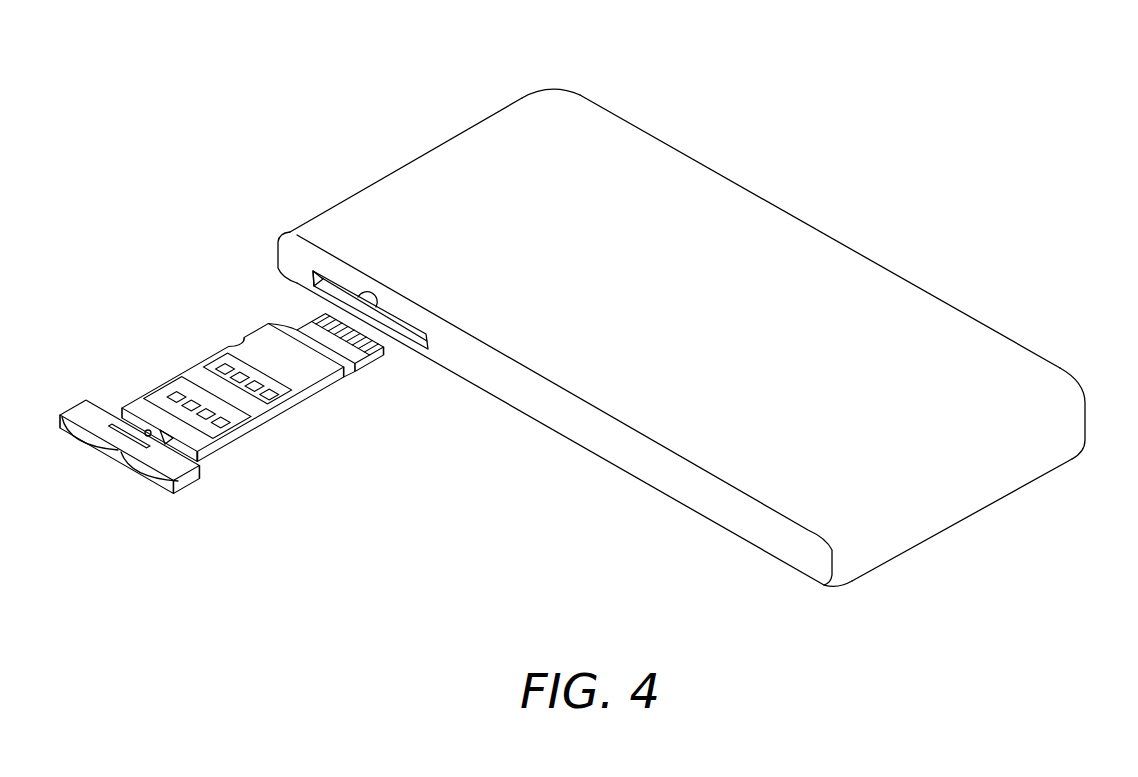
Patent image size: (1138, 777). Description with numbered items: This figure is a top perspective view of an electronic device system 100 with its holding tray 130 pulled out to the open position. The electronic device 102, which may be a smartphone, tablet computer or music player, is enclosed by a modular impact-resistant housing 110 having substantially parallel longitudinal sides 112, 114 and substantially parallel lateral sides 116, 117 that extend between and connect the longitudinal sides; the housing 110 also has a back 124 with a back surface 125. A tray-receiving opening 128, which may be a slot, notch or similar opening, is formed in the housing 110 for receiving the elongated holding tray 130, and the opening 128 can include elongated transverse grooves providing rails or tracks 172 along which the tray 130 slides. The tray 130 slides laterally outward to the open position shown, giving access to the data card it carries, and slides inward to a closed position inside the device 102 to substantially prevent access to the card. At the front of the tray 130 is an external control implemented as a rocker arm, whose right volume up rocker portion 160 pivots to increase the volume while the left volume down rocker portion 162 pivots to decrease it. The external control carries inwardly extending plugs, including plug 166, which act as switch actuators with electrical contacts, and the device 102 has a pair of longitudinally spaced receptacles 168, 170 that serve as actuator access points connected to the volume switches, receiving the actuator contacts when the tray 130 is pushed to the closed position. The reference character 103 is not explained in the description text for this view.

The electronic device system 100 is at (284, 421).
The electronic device 102 is at (551, 86).
The housing 103 is at (465, 212).
The modular impact-resistant housing 110 is at (1064, 373).
The longitudinal side 112 is at (710, 526).
The longitudinal side 114 is at (887, 272).
The lateral side 116 is at (458, 130).
The lateral side 117 is at (978, 512).
The back 124 is at (513, 107).
The back surface 125 is at (732, 207).
The tray-receiving opening 128 is at (425, 348).
The holding tray 130 is at (300, 407).
The right volume up rocker portion 160 is at (157, 481).
The left volume down rocker portion 162 is at (75, 434).
The plug 166 is at (96, 405).
The receptacle 168 is at (441, 343).
The receptacle 170 is at (284, 264).
The tracks 172 is at (297, 283).